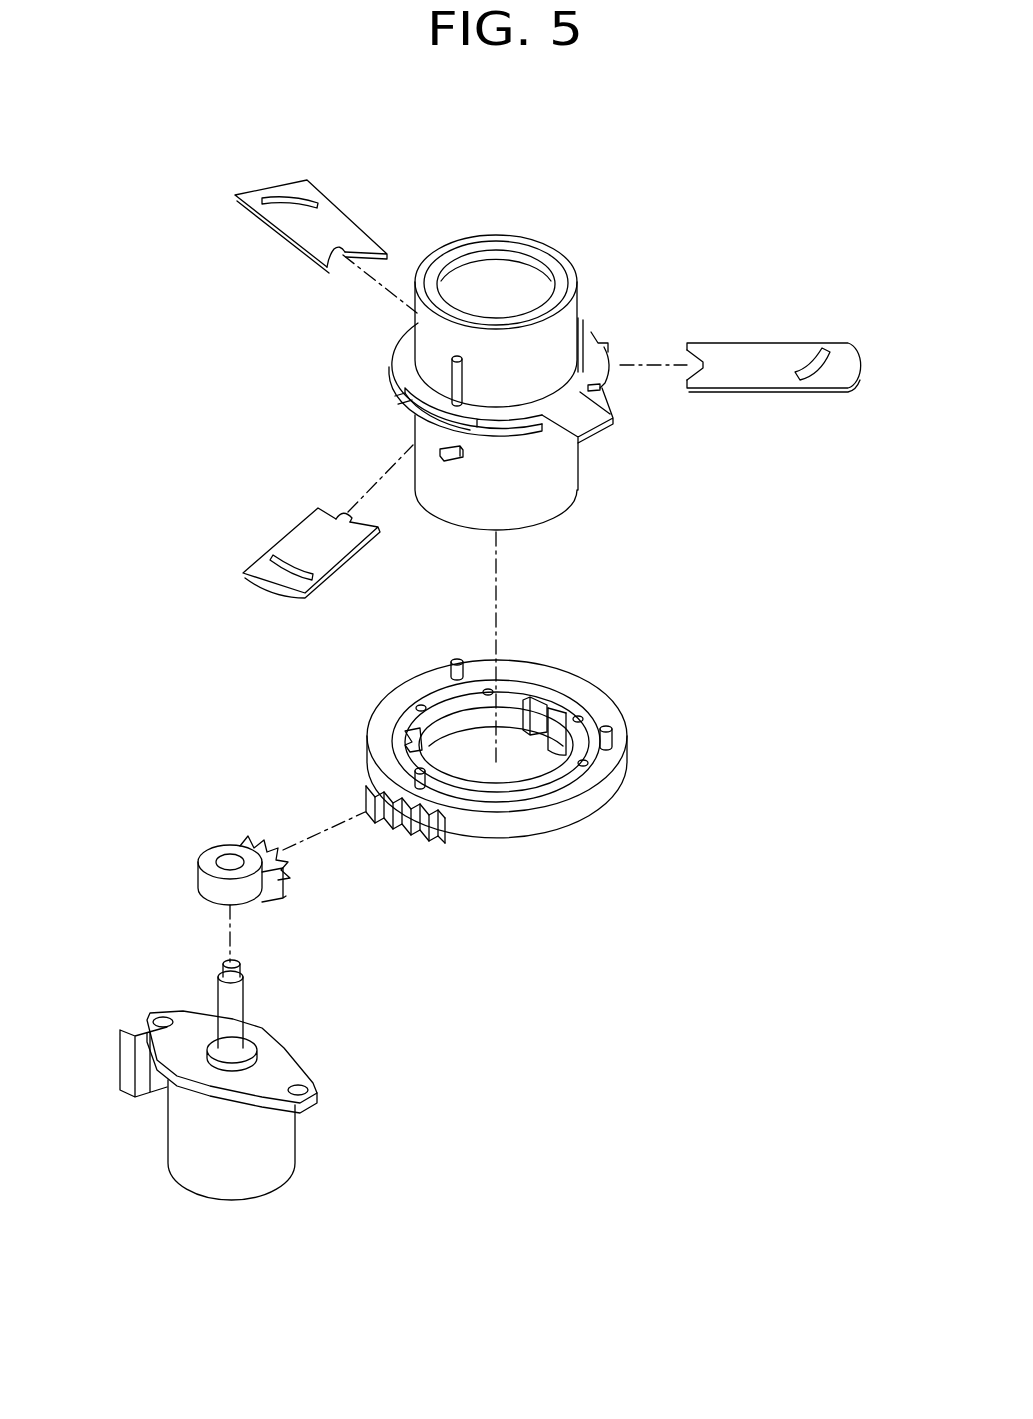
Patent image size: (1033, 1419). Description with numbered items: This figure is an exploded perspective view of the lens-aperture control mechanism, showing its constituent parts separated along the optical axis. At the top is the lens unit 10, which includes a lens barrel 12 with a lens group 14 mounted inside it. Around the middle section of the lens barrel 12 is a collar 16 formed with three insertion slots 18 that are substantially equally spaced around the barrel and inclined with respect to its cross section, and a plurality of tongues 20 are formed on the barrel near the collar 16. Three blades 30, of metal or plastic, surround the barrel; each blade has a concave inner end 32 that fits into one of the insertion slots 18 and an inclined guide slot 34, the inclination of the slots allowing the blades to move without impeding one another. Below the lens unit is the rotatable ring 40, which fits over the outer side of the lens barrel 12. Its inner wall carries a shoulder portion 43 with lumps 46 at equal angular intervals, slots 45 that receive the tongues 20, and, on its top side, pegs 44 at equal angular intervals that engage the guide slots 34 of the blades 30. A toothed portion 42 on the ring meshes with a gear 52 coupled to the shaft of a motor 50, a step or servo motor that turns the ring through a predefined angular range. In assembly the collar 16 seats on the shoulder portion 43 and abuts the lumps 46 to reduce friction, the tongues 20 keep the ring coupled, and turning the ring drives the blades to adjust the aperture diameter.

The lens unit 10 is at (600, 297).
The lens barrel 12 is at (433, 263).
The lens group 14 is at (493, 287).
The collar 16 is at (400, 397).
The insertion slots 18 is at (488, 437).
The tongues 20 is at (450, 462).
The blades 30 is at (295, 238).
The concave inner end 32 is at (336, 252).
The inclined guide slot 34 is at (280, 204).
The rotatable ring 40 is at (580, 837).
The toothed portion 42 is at (403, 832).
The shoulder portion 43 is at (545, 690).
The pegs 44 is at (457, 661).
The slots 45 is at (408, 737).
The lumps 46 is at (488, 690).
The motor 50 is at (198, 1140).
The gear 52 is at (240, 845).